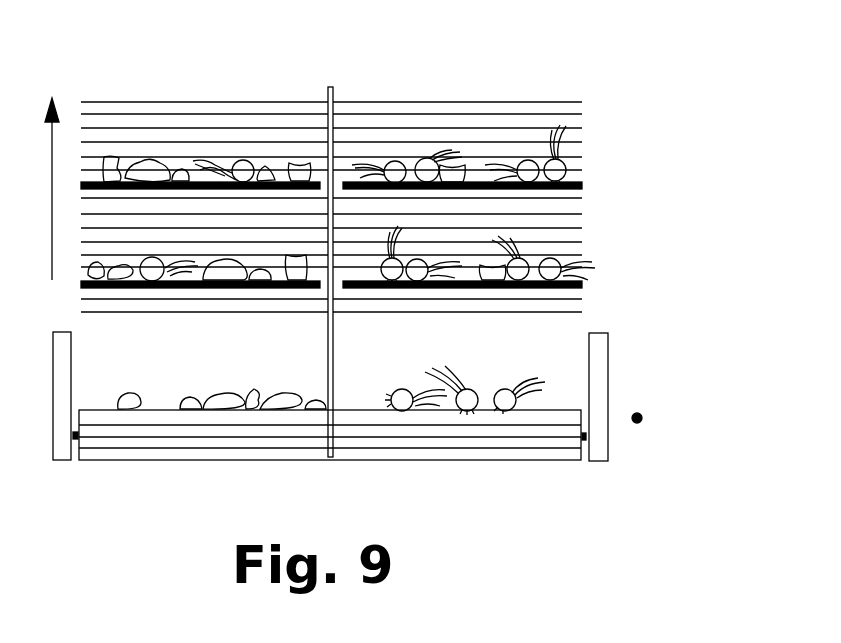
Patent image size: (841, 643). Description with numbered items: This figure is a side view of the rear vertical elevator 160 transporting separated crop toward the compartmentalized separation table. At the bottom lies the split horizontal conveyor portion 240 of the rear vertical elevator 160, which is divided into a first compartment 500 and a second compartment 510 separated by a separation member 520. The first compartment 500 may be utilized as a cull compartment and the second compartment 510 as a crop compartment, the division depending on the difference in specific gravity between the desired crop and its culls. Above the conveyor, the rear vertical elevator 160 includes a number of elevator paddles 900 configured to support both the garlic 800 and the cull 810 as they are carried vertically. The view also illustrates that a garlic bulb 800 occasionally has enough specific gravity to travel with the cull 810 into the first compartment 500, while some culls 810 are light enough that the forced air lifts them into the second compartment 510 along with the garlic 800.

The rear vertical elevator 160 is at (601, 224).
The horizontal conveyor portion 240 is at (489, 486).
The first compartment 500 is at (158, 381).
The second compartment 510 is at (472, 383).
The separation member 520 is at (330, 88).
The garlic 800 is at (570, 165).
The cull 810 is at (152, 161).
The elevator paddles 900 is at (582, 288).